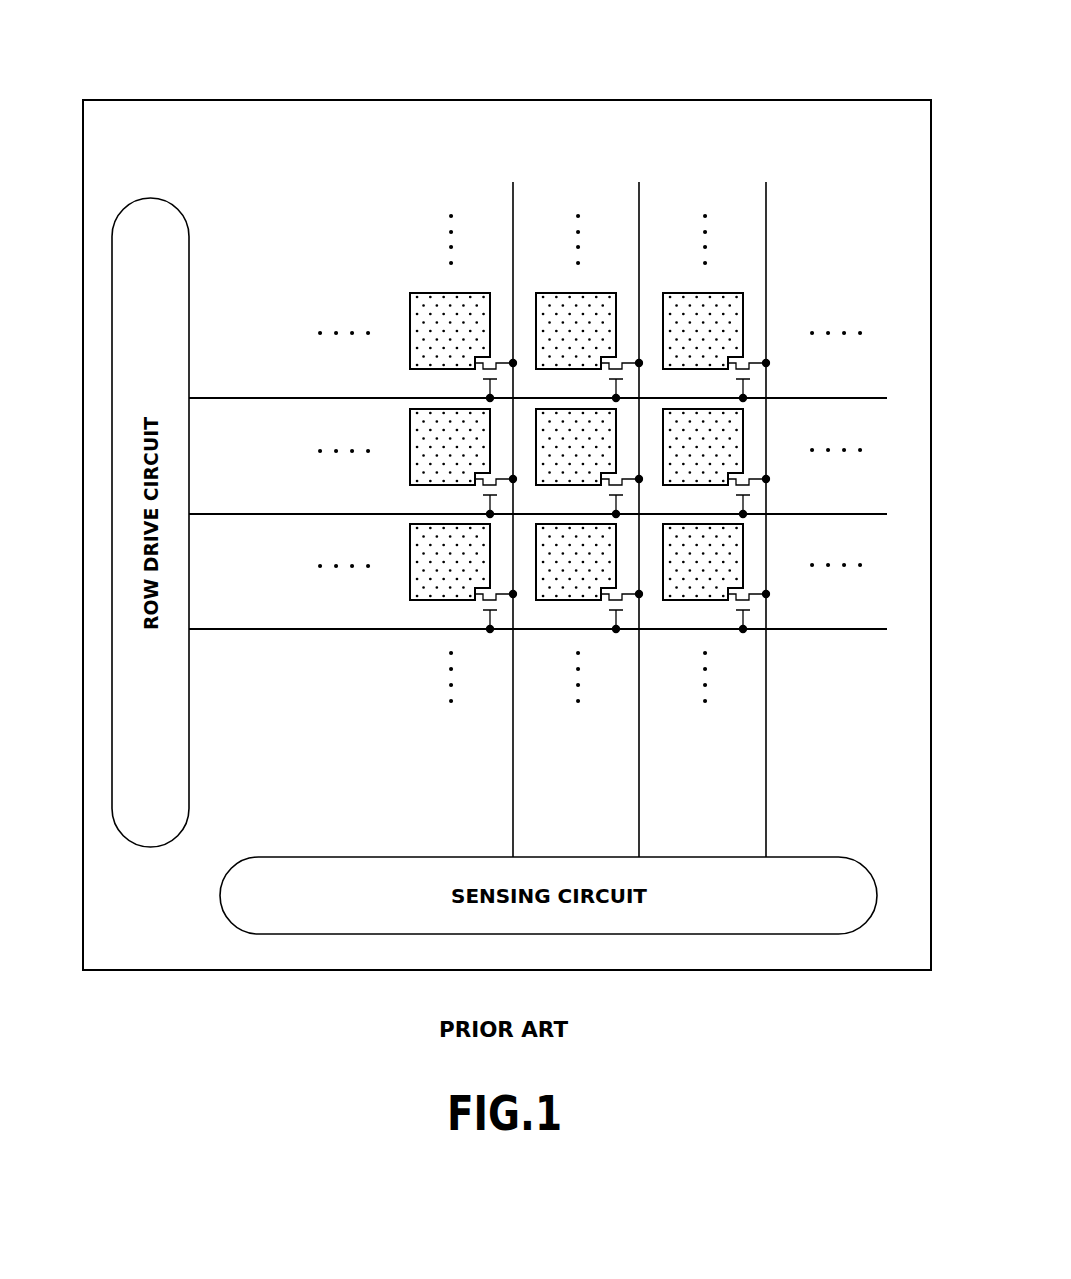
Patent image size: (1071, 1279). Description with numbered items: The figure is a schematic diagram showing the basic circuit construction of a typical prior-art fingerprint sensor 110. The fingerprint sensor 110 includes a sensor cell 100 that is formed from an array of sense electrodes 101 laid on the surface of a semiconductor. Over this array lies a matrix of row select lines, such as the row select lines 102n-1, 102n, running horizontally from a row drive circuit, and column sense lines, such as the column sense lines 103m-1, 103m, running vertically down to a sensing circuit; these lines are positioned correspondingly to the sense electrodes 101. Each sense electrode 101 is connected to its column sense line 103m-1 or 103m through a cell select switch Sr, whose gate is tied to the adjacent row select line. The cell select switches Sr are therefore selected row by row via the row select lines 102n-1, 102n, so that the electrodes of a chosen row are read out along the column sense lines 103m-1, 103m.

The fingerprint sensor 110 is at (752, 98).
The sensor cell 100 is at (776, 210).
The sense electrode 101 is at (731, 317).
The cell select switch Sr is at (743, 357).
The row select line 102n-1 is at (220, 399).
The row select line 102n is at (220, 515).
The column sense line 103m-1 is at (512, 780).
The column sense line 103m is at (640, 806).